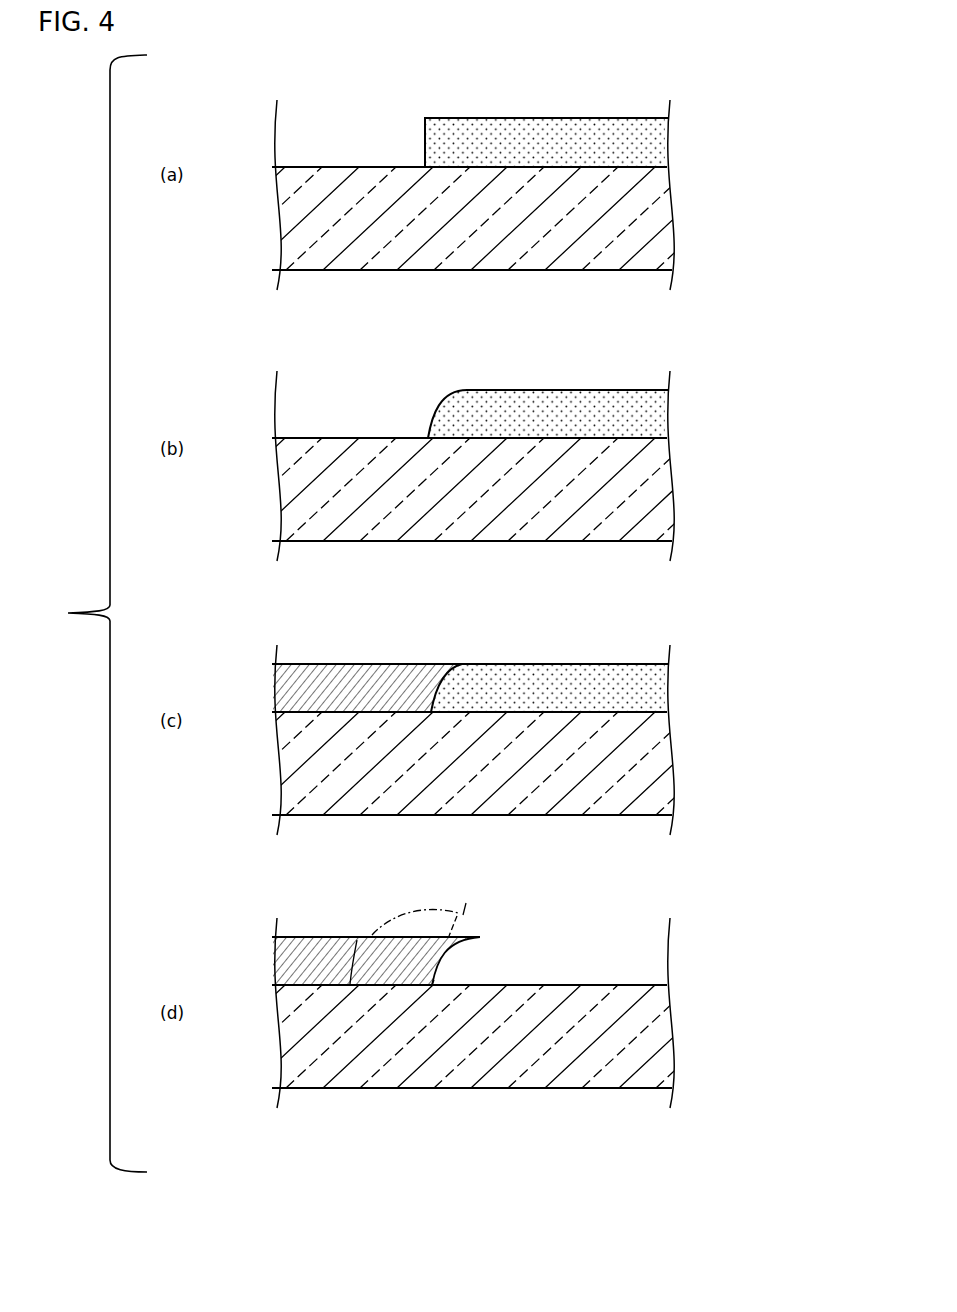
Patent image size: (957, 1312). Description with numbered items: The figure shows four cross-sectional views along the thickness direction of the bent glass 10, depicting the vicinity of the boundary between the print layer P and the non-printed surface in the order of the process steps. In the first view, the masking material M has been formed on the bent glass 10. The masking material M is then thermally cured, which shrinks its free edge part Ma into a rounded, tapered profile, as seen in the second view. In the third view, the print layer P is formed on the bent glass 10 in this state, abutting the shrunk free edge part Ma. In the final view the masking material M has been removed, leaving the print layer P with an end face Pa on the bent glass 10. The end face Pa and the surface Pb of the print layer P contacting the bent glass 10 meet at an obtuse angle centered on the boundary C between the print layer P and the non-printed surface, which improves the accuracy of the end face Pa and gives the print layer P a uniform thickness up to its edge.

The bent glass 10 is at (320, 247).
The masking material M is at (560, 137).
The free edge part of the masking material Ma is at (445, 400).
The print layer P is at (363, 682).
The end face of the print layer Pa is at (438, 971).
The surface of the print layer contacting the bent glass Pb is at (330, 984).
The boundary between the print layer and the non-printed surface C is at (434, 984).